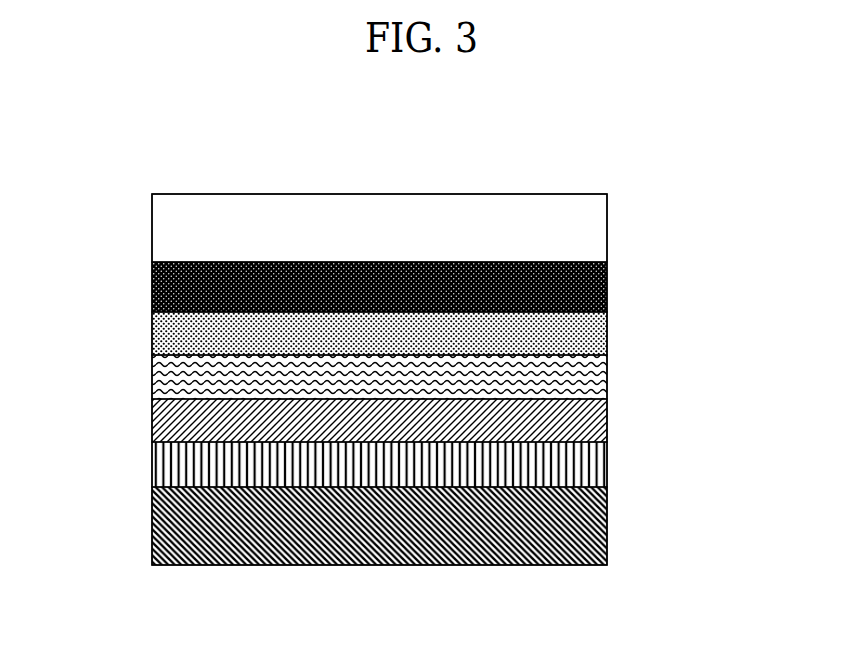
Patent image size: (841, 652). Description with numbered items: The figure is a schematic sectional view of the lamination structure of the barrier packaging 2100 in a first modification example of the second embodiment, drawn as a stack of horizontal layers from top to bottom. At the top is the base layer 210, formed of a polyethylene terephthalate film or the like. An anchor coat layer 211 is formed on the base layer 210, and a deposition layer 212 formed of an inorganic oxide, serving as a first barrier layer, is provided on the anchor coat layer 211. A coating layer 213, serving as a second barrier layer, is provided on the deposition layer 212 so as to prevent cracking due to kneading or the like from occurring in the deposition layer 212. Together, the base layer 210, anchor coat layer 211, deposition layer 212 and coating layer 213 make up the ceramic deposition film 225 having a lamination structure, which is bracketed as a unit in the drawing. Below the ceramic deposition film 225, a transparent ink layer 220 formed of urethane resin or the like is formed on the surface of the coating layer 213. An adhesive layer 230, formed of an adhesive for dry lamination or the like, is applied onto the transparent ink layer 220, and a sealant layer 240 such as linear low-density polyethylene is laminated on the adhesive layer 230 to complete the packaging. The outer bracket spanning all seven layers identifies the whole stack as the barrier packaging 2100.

The barrier packaging 2100 is at (115, 194).
The ceramic deposition film 225 is at (740, 167).
The base layer 210 is at (587, 227).
The anchor coat layer 211 is at (608, 278).
The deposition layer 212 is at (588, 325).
The coating layer 213 is at (600, 373).
The transparent ink layer 220 is at (590, 427).
The adhesive layer 230 is at (590, 470).
The sealant layer 240 is at (590, 537).